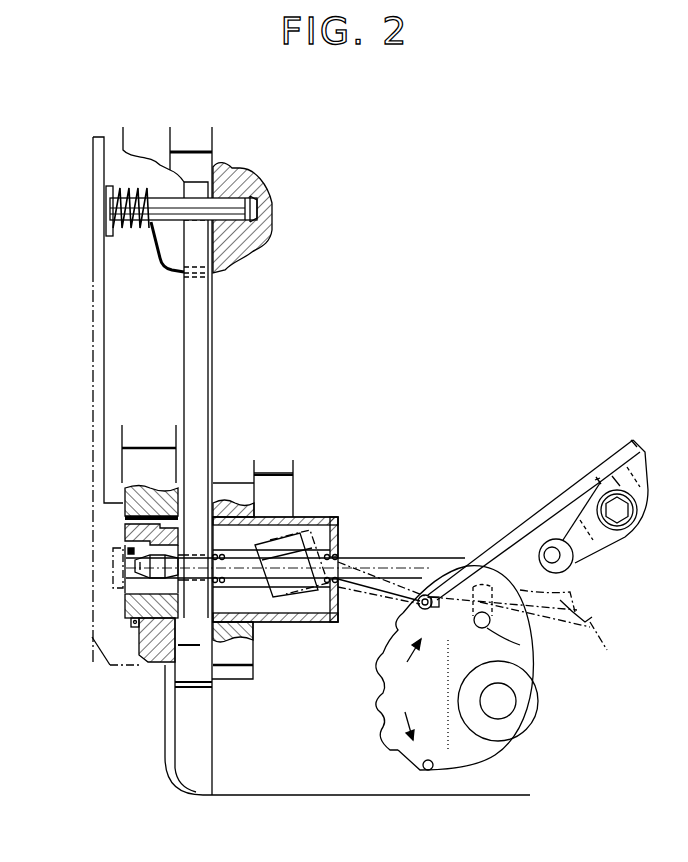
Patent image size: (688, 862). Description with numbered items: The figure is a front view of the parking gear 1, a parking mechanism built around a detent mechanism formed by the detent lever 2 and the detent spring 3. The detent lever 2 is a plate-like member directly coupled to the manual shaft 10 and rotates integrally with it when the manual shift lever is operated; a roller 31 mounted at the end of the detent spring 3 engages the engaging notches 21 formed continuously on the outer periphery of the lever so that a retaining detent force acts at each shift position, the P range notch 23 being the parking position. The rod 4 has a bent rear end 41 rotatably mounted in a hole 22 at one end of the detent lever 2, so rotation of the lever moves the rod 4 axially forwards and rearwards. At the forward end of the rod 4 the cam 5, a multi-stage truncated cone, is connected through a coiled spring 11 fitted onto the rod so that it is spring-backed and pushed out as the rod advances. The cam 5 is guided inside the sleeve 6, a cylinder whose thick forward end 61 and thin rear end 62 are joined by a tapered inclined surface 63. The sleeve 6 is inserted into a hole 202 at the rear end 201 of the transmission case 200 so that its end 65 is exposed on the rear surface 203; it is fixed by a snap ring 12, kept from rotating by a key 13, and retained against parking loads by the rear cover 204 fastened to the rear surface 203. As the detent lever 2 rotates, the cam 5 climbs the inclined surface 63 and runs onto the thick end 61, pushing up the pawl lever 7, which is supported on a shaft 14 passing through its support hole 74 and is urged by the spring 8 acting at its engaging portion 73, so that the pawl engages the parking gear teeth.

The parking gear 1 is at (138, 356).
The detent lever 2 is at (455, 756).
The detent spring 3 is at (566, 487).
The rod 4 is at (415, 558).
The cam 5 is at (138, 560).
The sleeve 6 is at (270, 516).
The pawl lever 7 is at (183, 390).
The spring 8 is at (157, 260).
The manual shaft 10 is at (513, 713).
The coiled spring 11 is at (278, 548).
The snap ring 12 is at (130, 627).
The key 13 is at (126, 521).
The shaft 14 is at (163, 198).
The engaging notches 21 is at (384, 670).
The hole 22 is at (520, 645).
The P range notch 23 is at (583, 610).
The roller 31 is at (418, 596).
The rear end 41 is at (474, 622).
The forward end 61 is at (126, 606).
The rear end 62 is at (332, 518).
The inclined surface 63 is at (255, 626).
The end 65 is at (126, 538).
The engaging portion 73 is at (183, 278).
The support hole 74 is at (217, 167).
The transmission case 200 is at (308, 799).
The rear end 201 is at (160, 645).
The hole 202 is at (110, 665).
The rear surface 203 is at (126, 497).
The rear cover 204 is at (98, 408).